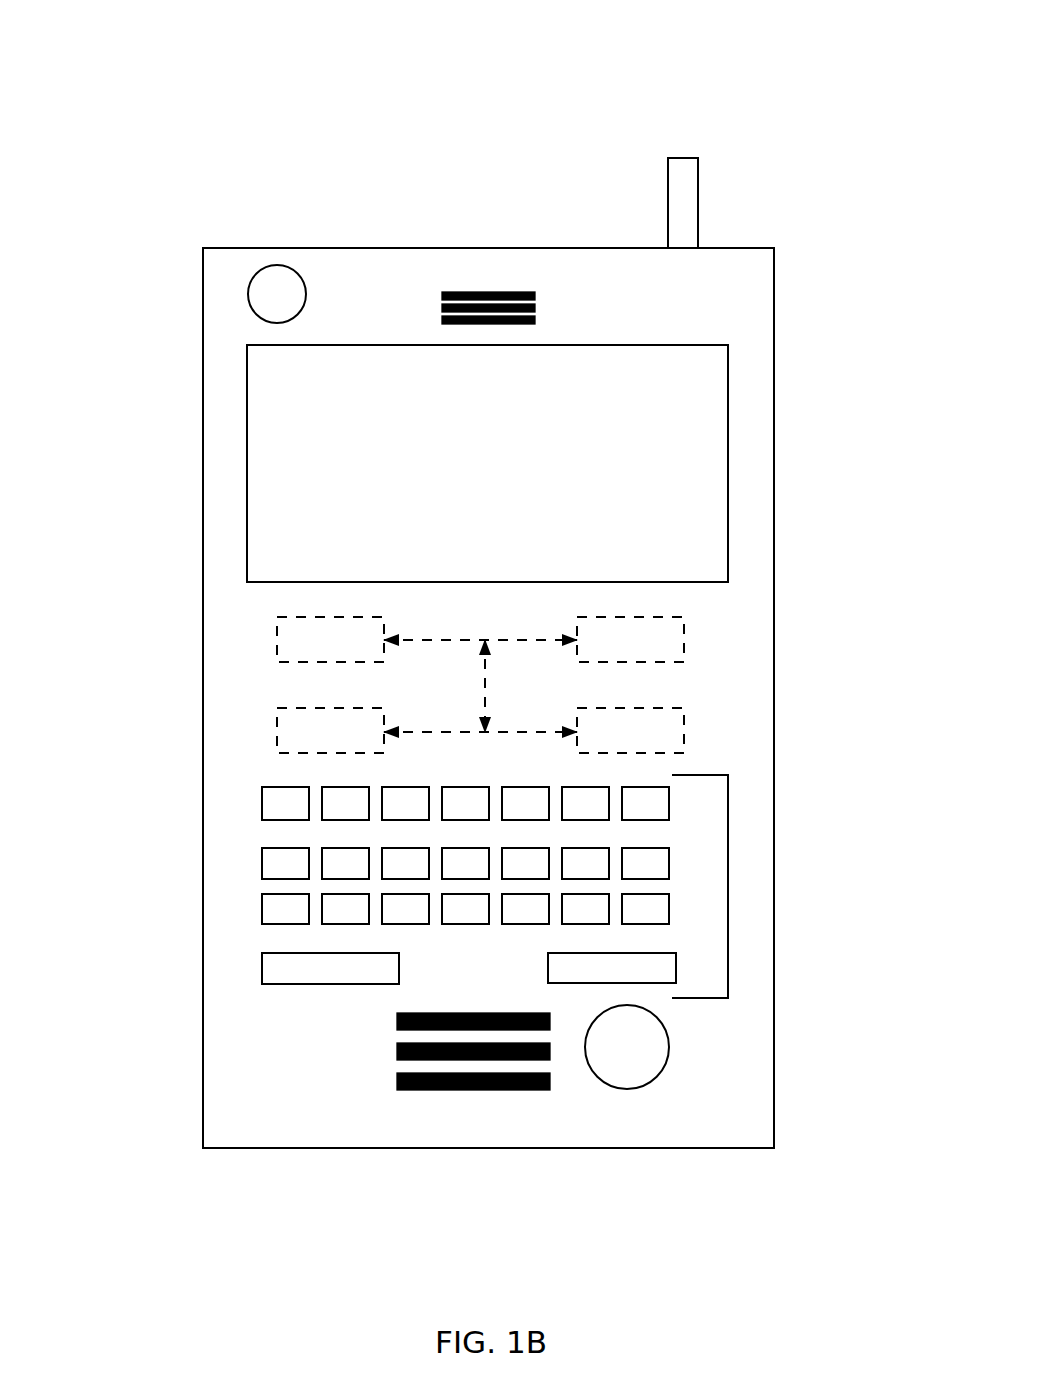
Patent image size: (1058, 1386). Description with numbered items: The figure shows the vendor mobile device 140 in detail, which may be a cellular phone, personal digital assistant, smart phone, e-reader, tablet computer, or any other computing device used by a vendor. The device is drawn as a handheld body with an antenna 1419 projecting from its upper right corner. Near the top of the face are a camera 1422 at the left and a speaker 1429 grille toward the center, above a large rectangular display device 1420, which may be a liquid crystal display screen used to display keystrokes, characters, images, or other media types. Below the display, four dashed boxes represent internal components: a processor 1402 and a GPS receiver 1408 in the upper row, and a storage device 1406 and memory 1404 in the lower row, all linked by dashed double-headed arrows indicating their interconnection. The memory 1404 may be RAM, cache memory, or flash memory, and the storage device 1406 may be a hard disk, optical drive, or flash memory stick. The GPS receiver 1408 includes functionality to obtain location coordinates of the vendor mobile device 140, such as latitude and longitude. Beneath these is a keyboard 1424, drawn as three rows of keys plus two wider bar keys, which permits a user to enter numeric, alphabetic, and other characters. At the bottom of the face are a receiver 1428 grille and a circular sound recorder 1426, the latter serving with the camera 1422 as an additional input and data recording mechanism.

The vendor mobile device 140 is at (557, 112).
The antenna 1419 is at (685, 202).
The camera 1422 is at (186, 258).
The speaker 1429 is at (488, 292).
The display device 1420 is at (574, 463).
The processor 1402 is at (278, 638).
The GPS receiver 1408 is at (690, 638).
The storage device 1406 is at (278, 730).
The memory 1404 is at (690, 730).
The keyboard 1424 is at (730, 878).
The sound recorder 1426 is at (628, 1047).
The receiver 1428 is at (470, 1092).